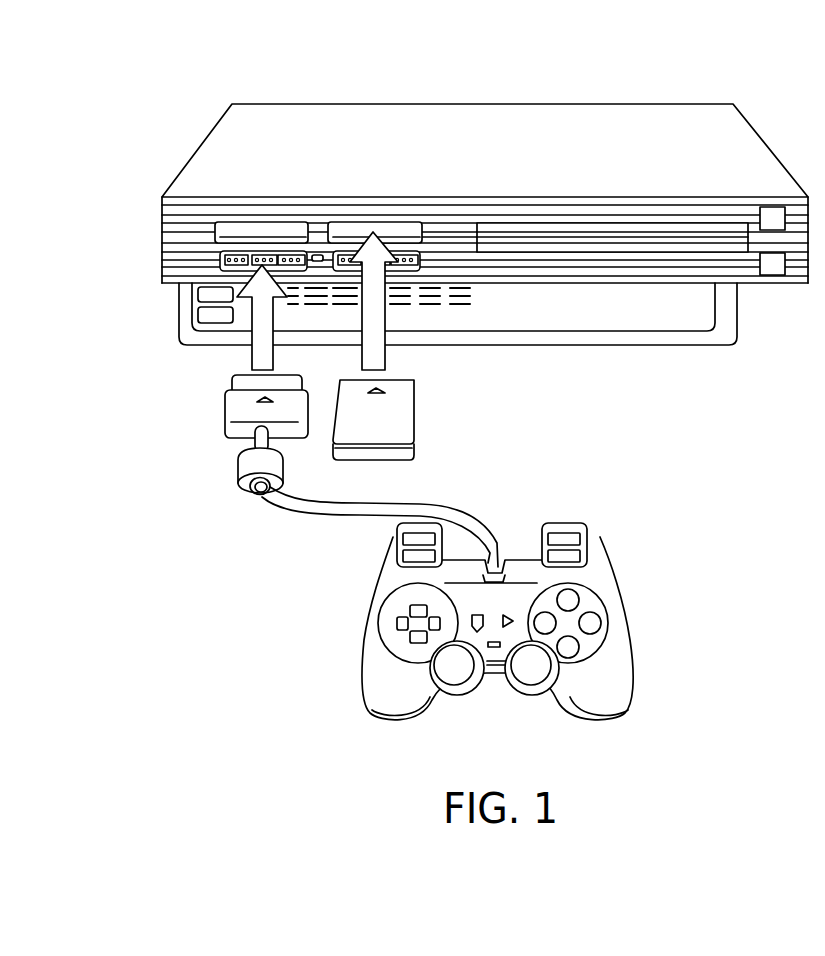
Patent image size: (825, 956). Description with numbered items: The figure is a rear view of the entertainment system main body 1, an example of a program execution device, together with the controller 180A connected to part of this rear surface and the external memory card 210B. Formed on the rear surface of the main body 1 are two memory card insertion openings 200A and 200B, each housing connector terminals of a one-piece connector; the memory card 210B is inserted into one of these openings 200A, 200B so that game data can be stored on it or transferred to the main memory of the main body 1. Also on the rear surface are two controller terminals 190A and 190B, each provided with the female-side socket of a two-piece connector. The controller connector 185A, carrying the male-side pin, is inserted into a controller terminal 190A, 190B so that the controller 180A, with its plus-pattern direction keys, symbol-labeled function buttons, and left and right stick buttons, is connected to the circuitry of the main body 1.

The entertainment system main body 1 is at (545, 105).
The memory card insertion opening 200A is at (268, 234).
The memory card insertion opening 200B is at (394, 233).
The controller terminal 190A is at (228, 268).
The controller terminal 190B is at (406, 266).
The controller connector 185A is at (225, 425).
The memory card 210B is at (415, 443).
The controller 180A is at (629, 666).